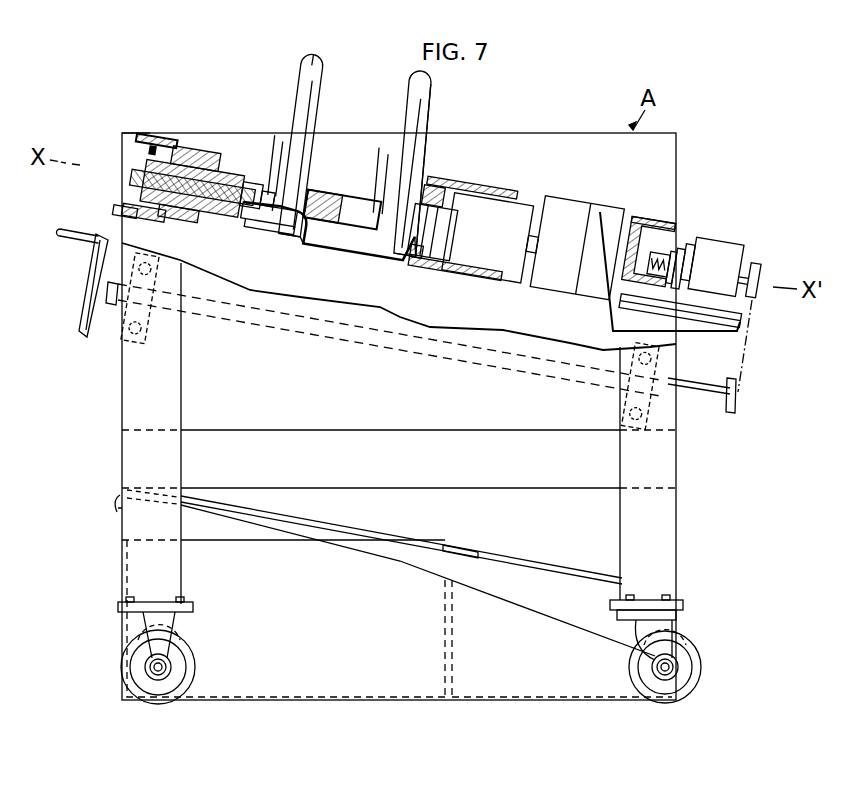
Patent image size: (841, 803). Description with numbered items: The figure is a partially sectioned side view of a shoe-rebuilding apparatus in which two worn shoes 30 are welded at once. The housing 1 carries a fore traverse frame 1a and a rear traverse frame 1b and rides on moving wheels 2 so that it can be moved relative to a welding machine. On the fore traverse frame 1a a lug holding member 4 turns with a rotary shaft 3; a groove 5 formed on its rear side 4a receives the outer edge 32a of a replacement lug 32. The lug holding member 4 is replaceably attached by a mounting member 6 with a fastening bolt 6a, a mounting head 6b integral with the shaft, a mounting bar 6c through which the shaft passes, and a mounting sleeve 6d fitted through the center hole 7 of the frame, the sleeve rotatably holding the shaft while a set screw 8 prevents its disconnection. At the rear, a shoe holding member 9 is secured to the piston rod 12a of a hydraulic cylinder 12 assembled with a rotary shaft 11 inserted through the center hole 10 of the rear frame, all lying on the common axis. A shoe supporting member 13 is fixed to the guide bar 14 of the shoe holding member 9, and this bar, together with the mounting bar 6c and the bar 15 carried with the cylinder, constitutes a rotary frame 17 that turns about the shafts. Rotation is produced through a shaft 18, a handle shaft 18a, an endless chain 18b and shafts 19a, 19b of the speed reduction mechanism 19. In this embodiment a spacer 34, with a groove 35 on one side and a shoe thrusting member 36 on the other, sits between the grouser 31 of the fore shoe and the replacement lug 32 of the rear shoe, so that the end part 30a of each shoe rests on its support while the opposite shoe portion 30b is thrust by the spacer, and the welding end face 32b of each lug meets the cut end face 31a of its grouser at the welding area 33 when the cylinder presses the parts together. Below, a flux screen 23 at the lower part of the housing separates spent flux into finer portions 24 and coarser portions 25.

The housing 1 is at (122, 410).
The fore traverse frame 1a is at (138, 150).
The rear traverse frame 1b is at (640, 218).
The moving wheels 2 is at (196, 670).
The rotary shaft 3 is at (180, 222).
The lug holding member 4 is at (232, 212).
The rear side of lug holding member 4a is at (262, 172).
The groove 5 is at (252, 218).
The mounting member 6 is at (205, 160).
The fastening bolt 6a is at (196, 225).
The mounting head 6b is at (192, 148).
The mounting bar 6c is at (168, 140).
The mounting sleeve 6d is at (128, 207).
The center hole 7 is at (150, 222).
The set screw 8 is at (150, 153).
The shoe holding member 9 is at (412, 192).
The center hole 10 is at (650, 230).
The rotary shaft 11 is at (622, 272).
The hydraulic cylinder 12 is at (525, 210).
The piston rod 12a is at (445, 188).
The shoe supporting member 13 is at (310, 300).
The guide bar 14 is at (490, 180).
The bar 15 is at (578, 196).
The rotary frame 17 is at (482, 290).
The shaft 18 is at (86, 338).
The handle shaft 18a is at (470, 355).
The endless chain 18b is at (745, 372).
The speed reduction mechanism 19 is at (720, 240).
The shaft 19a is at (750, 270).
The shaft 19b is at (682, 255).
The flux screen 23 is at (400, 535).
The finer portions 24 is at (305, 685).
The coarser portions 25 is at (515, 685).
The worn shoe 30 is at (320, 110).
The end part of worn shoe 30a is at (286, 255).
The clamp arm foot 30b is at (306, 246).
The grouser 31 is at (296, 175).
The cut end face 31a is at (268, 130).
The replacement lug 32 is at (282, 190).
The outer edge 32a is at (330, 190).
The welding end face 32b is at (280, 212).
The welding area 33 is at (276, 128).
The spacer 34 is at (316, 186).
The groove 35 is at (352, 222).
The shoe thrusting member 36 is at (306, 66).